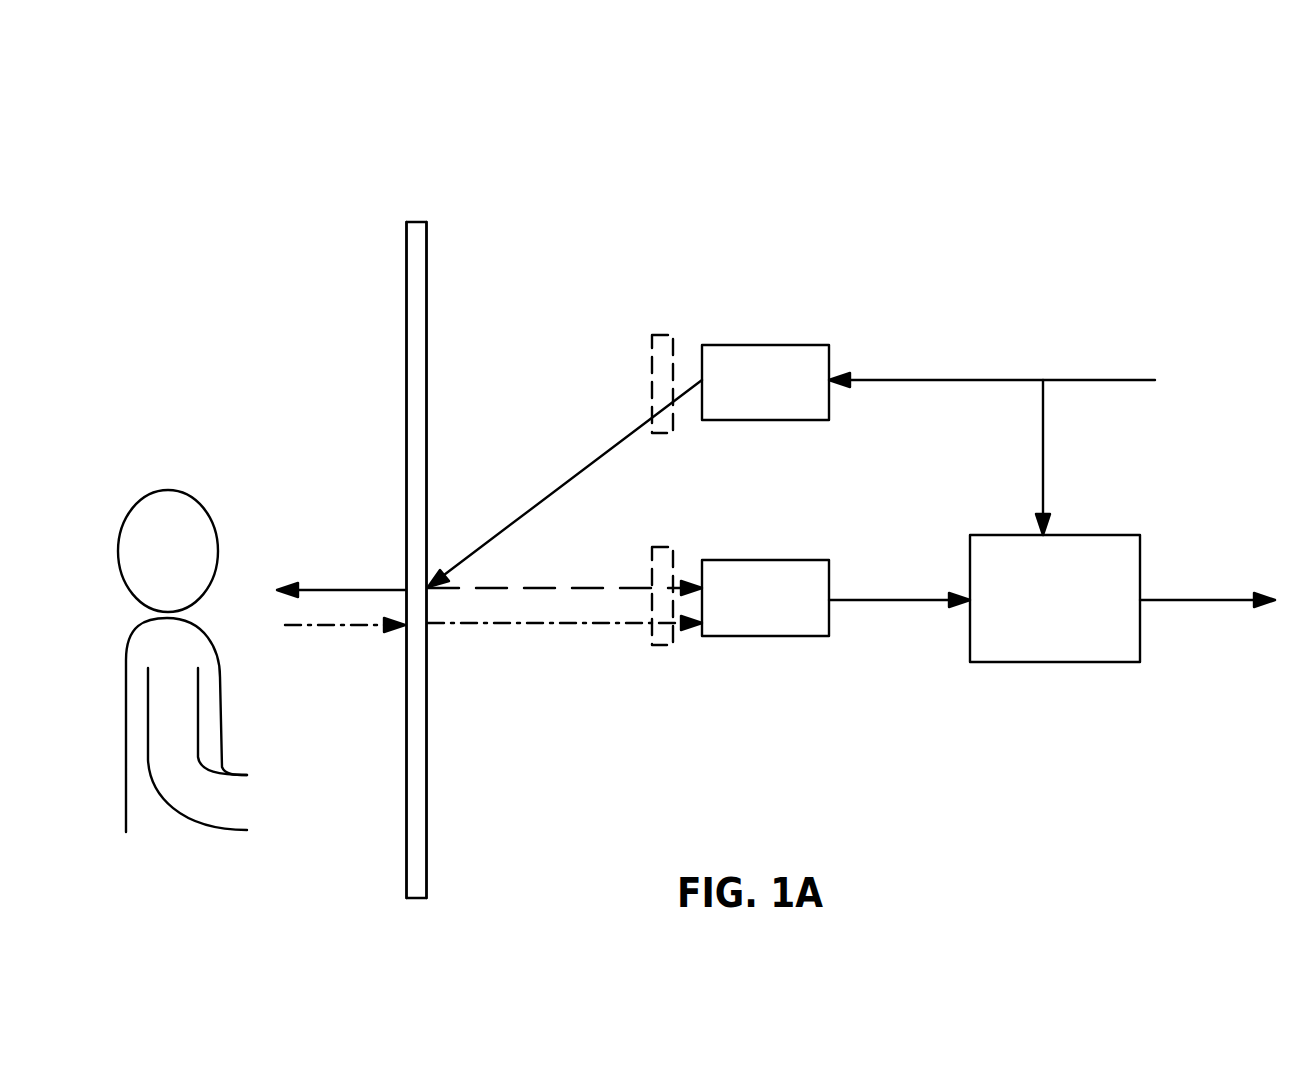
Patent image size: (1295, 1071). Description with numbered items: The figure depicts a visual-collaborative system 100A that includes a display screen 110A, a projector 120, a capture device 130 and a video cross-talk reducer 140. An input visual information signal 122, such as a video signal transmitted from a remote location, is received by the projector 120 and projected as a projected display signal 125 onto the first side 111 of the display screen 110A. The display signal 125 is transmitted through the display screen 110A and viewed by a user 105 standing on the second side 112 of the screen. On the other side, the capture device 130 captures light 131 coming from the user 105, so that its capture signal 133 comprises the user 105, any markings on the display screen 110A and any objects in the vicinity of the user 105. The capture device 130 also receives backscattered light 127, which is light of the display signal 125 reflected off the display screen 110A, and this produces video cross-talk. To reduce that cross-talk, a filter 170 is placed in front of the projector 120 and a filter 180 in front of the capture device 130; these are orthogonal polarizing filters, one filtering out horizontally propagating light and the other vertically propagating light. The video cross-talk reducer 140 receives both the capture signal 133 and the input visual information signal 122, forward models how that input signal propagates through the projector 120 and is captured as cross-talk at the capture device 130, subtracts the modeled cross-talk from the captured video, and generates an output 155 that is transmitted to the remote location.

The visual-collaborative system 100A is at (185, 113).
The user 105 is at (188, 490).
The display screen 110A is at (410, 222).
The first side 111 is at (428, 258).
The second side 112 is at (404, 243).
The projector 120 is at (762, 345).
The input visual information signal 122 is at (1217, 393).
The projected display signal 125 is at (615, 442).
The backscattered light 127 is at (527, 585).
The capture device 130 is at (750, 637).
The light 131 is at (310, 627).
The capture signal 133 is at (900, 583).
The video cross-talk reducer 140 is at (1073, 635).
The output 155 is at (1243, 583).
The filter 170 is at (658, 335).
The filter 180 is at (662, 645).